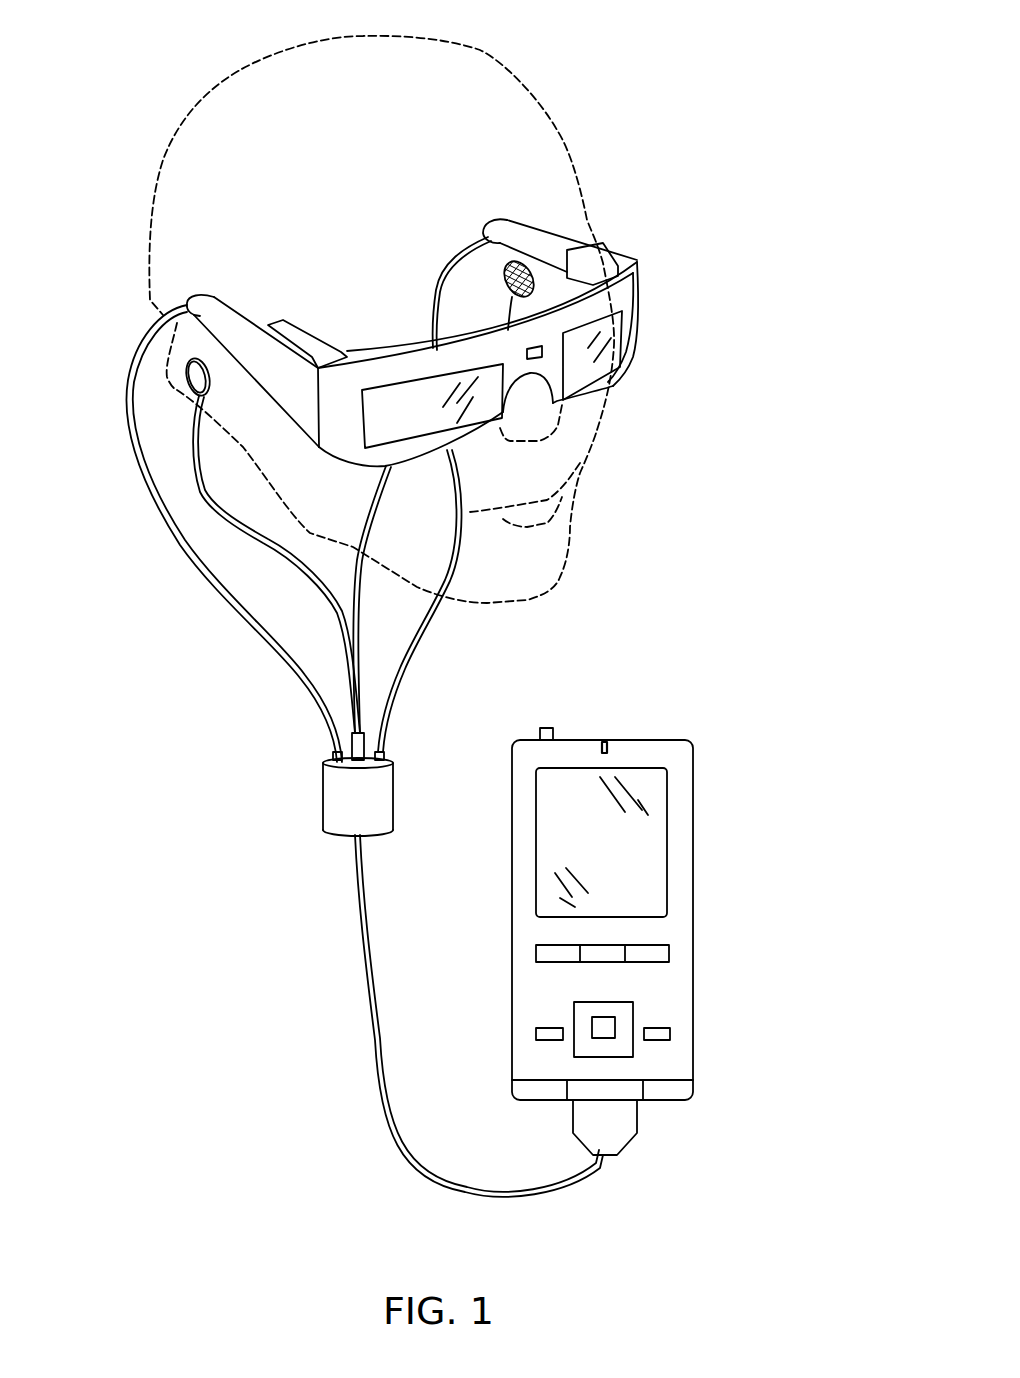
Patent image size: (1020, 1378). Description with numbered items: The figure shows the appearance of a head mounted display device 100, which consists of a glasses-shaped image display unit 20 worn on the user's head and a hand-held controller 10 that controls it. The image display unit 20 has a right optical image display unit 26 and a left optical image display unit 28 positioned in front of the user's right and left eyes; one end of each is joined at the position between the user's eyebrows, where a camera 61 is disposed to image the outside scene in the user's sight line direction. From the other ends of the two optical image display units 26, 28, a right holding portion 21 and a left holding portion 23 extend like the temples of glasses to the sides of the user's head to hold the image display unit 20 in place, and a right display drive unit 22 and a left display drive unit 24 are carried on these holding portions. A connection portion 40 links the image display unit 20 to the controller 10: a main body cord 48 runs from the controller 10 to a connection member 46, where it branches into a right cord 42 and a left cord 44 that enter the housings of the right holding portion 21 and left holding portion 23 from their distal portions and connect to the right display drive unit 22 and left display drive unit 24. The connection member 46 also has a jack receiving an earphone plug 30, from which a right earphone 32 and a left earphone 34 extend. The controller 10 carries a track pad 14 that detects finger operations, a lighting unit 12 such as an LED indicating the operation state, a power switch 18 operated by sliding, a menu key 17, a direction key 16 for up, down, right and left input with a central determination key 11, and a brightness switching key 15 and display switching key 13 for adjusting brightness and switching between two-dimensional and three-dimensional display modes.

The head mounted display device 100 is at (594, 119).
The controller 10 is at (611, 884).
The determination key 11 is at (608, 1027).
The lighting unit 12 is at (605, 741).
The display switching key 13 is at (667, 1034).
The track pad 14 is at (557, 832).
The brightness switching key 15 is at (538, 1034).
The direction key 16 is at (585, 1018).
The menu key 17 is at (537, 945).
The power switch 18 is at (547, 727).
The image display unit 20 is at (435, 340).
The right holding portion 21 is at (216, 285).
The right display drive unit 22 is at (291, 337).
The left holding portion 23 is at (560, 213).
The left display drive unit 24 is at (595, 243).
The right optical image display unit 26 is at (412, 437).
The left optical image display unit 28 is at (622, 350).
The earphone plug 30 is at (362, 743).
The right earphone 32 is at (192, 378).
The left earphone 34 is at (505, 290).
The connection portion 40 is at (365, 751).
The right cord 42 is at (223, 590).
The left cord 44 is at (423, 623).
The connection member 46 is at (382, 797).
The main body cord 48 is at (363, 980).
The camera 61 is at (536, 348).